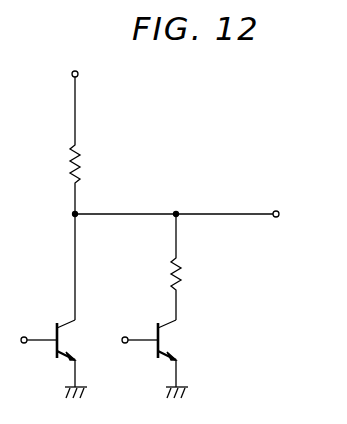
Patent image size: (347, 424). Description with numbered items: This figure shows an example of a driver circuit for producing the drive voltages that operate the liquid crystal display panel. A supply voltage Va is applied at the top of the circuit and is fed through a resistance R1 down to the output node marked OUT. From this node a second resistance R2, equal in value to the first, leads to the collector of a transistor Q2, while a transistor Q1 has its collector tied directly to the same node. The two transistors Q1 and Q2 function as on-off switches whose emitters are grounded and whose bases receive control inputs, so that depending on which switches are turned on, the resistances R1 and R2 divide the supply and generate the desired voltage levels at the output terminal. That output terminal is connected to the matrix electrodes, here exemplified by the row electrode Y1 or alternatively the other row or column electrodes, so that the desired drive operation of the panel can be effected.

The supply voltage Va is at (91, 101).
The resistance R1 is at (90, 178).
The resistance R2 is at (191, 253).
The transistor Q1 is at (54, 306).
The transistor Q2 is at (155, 344).
The row electrode Y1 is at (293, 254).